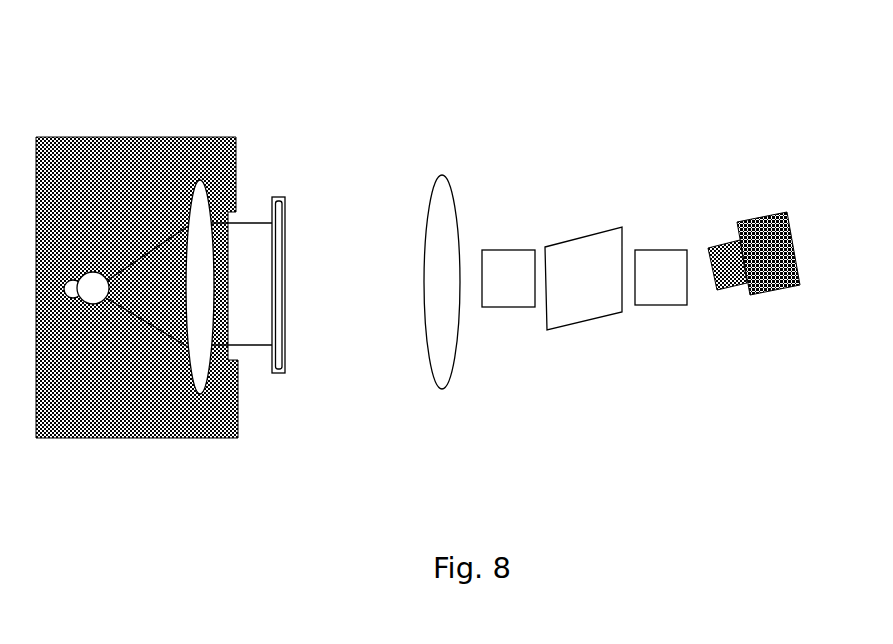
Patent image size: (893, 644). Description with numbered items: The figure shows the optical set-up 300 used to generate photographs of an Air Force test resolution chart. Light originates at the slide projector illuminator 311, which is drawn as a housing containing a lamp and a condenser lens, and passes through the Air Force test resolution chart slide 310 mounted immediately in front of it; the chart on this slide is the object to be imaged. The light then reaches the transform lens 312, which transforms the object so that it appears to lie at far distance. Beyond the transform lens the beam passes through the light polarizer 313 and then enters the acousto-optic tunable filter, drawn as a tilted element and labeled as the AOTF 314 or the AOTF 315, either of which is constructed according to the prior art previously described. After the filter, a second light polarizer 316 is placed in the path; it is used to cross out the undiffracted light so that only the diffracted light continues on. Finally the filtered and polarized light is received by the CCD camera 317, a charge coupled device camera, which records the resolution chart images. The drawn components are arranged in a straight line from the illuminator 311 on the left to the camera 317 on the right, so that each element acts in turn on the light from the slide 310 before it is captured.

The set-up 300 is at (378, 68).
The Air Force test resolution chart slide 310 is at (282, 192).
The slide projector illuminator 311 is at (125, 447).
The transform lens 312 is at (443, 165).
The light polarizer 313 is at (507, 315).
The AOTF 314 is at (623, 227).
The AOTF 315 is at (587, 220).
The light polarizer 316 is at (670, 315).
The CCD camera 317 is at (769, 303).